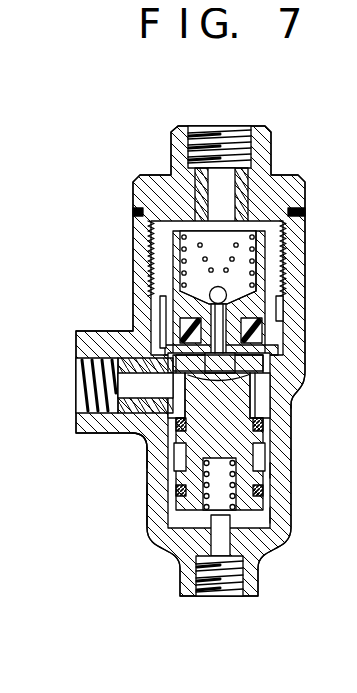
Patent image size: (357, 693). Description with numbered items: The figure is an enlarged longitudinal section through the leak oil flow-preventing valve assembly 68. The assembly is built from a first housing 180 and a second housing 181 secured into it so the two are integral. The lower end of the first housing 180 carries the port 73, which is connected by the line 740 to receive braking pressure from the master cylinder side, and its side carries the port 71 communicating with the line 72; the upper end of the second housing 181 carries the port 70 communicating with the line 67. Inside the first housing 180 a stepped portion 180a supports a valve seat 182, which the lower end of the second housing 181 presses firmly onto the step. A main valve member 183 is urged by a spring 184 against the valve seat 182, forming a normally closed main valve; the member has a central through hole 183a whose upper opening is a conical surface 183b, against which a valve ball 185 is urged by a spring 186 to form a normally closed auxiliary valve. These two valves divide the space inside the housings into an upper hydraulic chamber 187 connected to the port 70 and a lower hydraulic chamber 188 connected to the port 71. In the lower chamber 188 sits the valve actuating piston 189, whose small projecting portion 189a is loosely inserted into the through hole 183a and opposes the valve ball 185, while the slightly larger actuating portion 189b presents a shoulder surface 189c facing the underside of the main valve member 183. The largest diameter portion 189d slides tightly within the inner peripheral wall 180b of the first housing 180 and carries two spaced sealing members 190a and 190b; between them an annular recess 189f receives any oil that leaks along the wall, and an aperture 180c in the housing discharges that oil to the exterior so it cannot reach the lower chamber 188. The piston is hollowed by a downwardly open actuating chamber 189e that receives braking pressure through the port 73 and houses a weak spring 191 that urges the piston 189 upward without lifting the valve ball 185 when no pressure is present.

The line 67 is at (210, 118).
The leak oil flow-preventing valve assembly 68 is at (275, 166).
The port 70 is at (188, 130).
The port 71 is at (76, 392).
The line 72 is at (68, 377).
The port 73 is at (226, 588).
The line 740 is at (210, 588).
The first housing 180 is at (264, 516).
The stepped portion 180a is at (258, 354).
The inner peripheral wall 180b is at (260, 396).
The aperture 180c is at (259, 440).
The second housing 181 is at (289, 176).
The valve seat 182 is at (266, 333).
The main valve member 183 is at (256, 284).
The through hole 183a is at (272, 300).
The conical surface 183b is at (258, 260).
The spring 184 is at (210, 243).
The valve ball 185 is at (173, 262).
The spring 186 is at (276, 214).
The upper hydraulic chamber 187 is at (240, 228).
The lower hydraulic chamber 188 is at (127, 431).
The valve actuating piston 189 is at (141, 441).
The projecting portion 189a is at (155, 290).
The actuating portion 189b is at (178, 320).
The shoulder surface 189c is at (281, 378).
The largest diameter portion 189d is at (280, 508).
The actuating chamber 189e is at (173, 482).
The annular recess 189f is at (262, 462).
The sealing member 190a is at (256, 416).
The sealing member 190b is at (256, 481).
The spring 191 is at (168, 530).